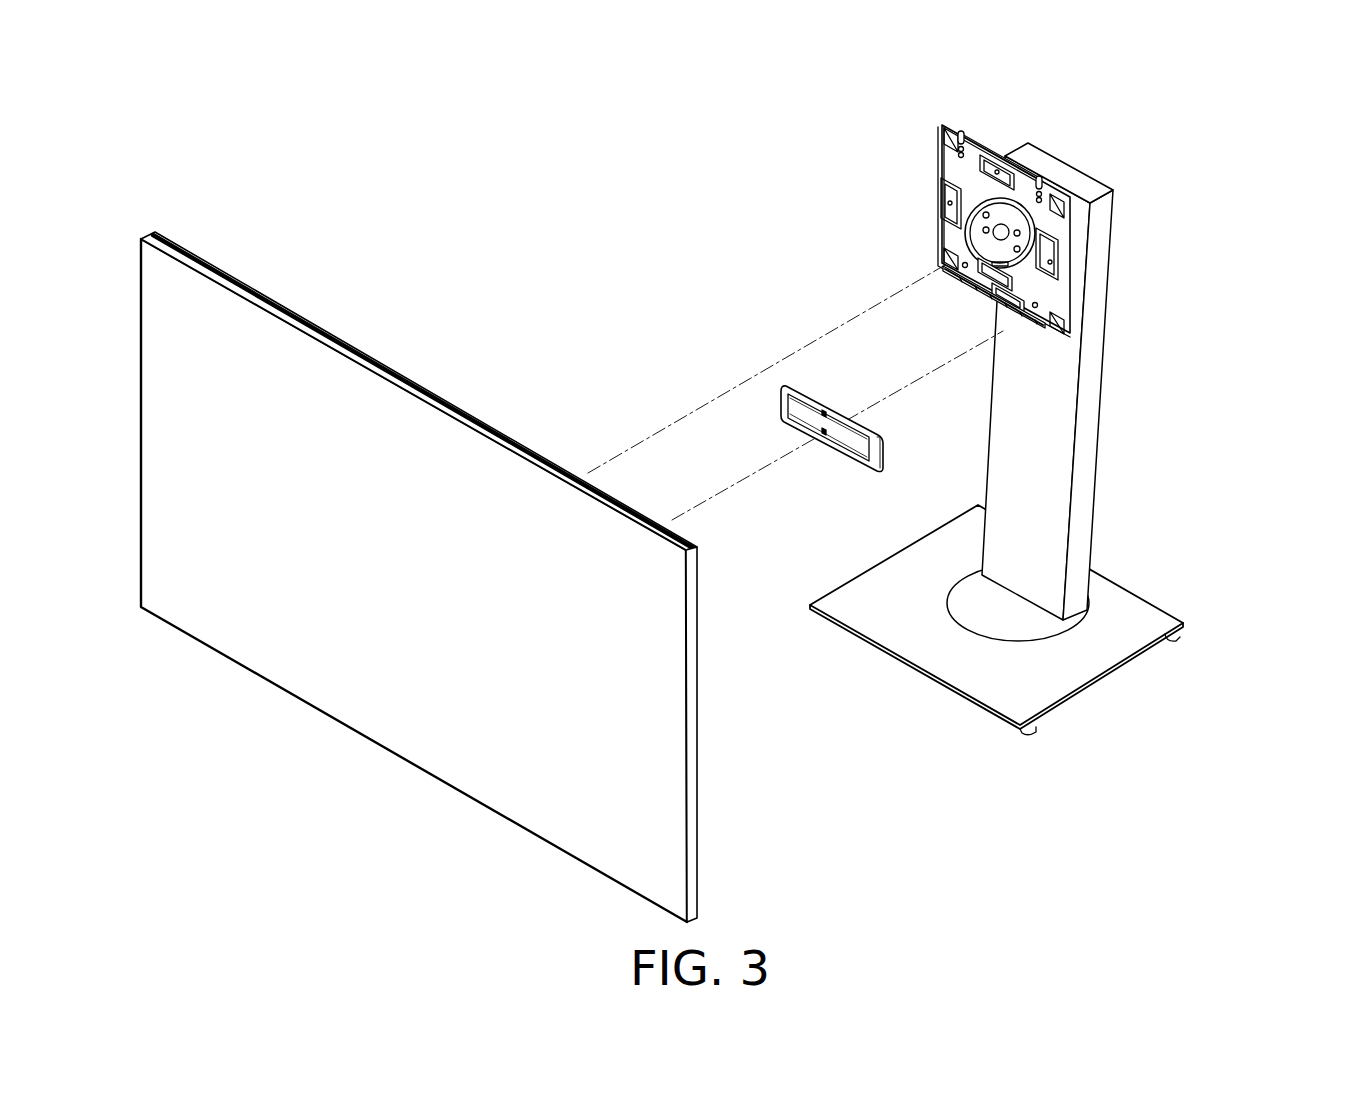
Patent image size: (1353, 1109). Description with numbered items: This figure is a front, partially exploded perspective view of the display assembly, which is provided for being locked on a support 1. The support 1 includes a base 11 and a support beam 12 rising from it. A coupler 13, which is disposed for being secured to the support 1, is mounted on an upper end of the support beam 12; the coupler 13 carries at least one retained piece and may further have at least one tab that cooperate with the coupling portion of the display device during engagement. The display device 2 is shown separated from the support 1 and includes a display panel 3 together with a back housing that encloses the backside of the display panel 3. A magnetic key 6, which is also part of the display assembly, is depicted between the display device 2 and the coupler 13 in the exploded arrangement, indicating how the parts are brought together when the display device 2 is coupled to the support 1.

The support 1 is at (927, 427).
The base 11 is at (1132, 612).
The support beam 12 is at (1050, 532).
The coupler 13 is at (984, 202).
The display device 2 is at (419, 523).
The display panel 3 is at (447, 715).
The magnetic key 6 is at (867, 450).